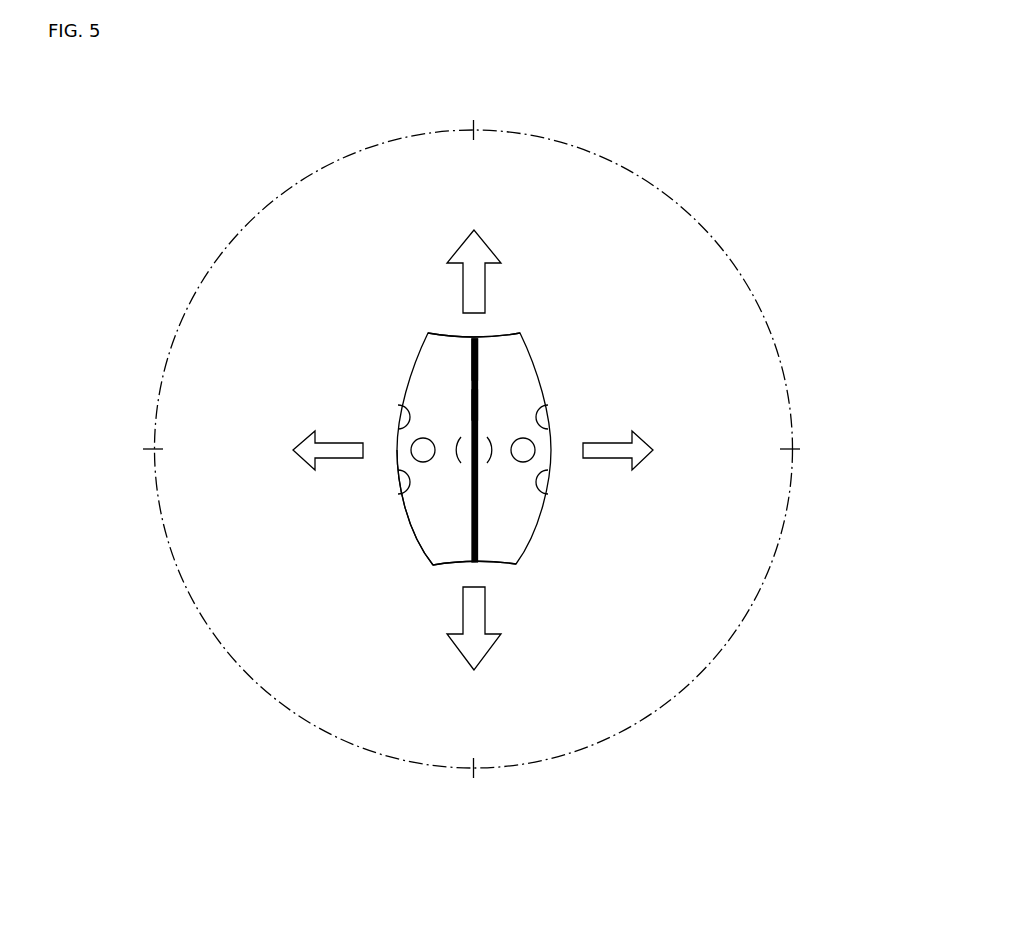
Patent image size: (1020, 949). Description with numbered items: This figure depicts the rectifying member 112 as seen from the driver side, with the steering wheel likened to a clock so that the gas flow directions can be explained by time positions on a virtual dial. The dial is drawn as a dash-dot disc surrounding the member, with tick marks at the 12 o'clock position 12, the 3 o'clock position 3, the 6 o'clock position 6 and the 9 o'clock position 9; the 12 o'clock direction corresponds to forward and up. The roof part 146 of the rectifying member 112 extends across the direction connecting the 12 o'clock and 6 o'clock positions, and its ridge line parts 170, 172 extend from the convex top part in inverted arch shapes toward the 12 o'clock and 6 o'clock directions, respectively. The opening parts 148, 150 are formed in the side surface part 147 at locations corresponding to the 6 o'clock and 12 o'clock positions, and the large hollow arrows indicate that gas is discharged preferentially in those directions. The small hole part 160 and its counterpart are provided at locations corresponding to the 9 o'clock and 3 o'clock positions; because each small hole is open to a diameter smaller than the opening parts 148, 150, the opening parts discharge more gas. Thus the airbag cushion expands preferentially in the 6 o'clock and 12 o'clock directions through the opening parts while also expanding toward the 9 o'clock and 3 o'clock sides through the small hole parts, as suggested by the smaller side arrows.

The rectifying member 112 is at (415, 357).
The roof part 146 is at (478, 402).
The side surface part 147 is at (428, 535).
The opening part 148 is at (500, 565).
The opening part 150 is at (508, 334).
The small hole part 160 is at (402, 483).
The ridge line part 170 is at (478, 517).
The ridge line part 172 is at (478, 362).
The 12 o'clock position 12 is at (476, 117).
The 3 o'clock position 3 is at (801, 450).
The 6 o'clock position 6 is at (473, 783).
The 9 o'clock position 9 is at (143, 450).